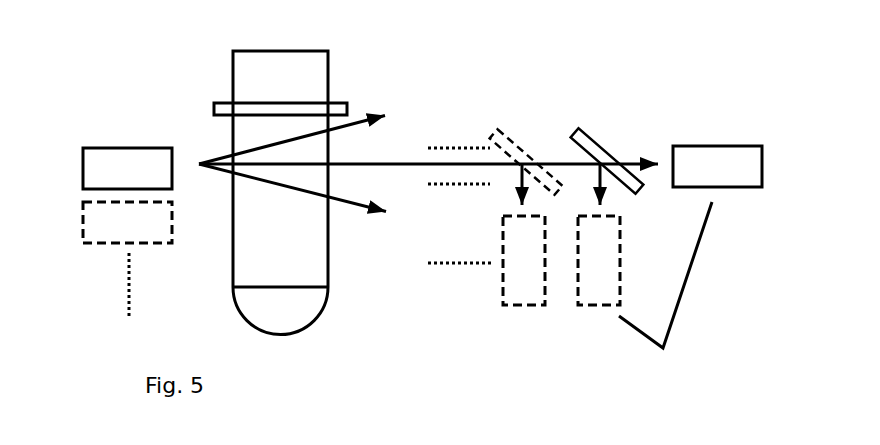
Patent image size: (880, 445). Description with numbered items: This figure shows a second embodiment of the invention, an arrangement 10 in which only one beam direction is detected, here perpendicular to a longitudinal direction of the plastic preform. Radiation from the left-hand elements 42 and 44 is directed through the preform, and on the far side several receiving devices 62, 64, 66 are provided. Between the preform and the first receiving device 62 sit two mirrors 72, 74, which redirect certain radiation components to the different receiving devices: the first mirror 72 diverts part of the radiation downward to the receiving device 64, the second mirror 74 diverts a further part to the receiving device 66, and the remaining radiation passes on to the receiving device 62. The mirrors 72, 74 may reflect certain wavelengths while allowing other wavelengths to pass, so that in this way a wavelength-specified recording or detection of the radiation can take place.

The analysis system 10 is at (205, 73).
The light source 42 is at (143, 182).
The second light source 44 is at (143, 236).
The receiving device 62 is at (733, 180).
The receiving device 64 is at (539, 274).
The receiving device 66 is at (614, 274).
The mirror 72 is at (517, 138).
The mirror 74 is at (602, 147).